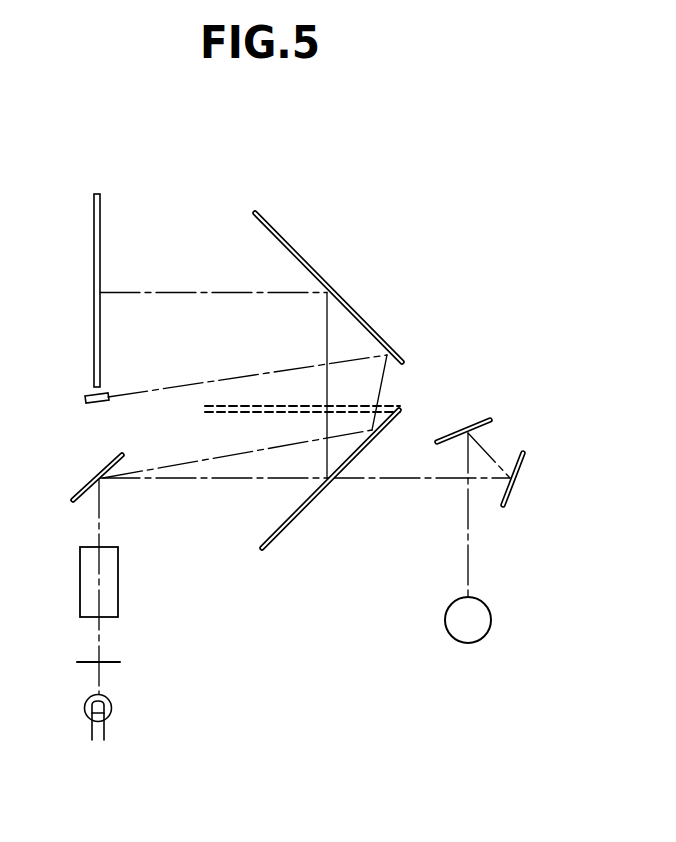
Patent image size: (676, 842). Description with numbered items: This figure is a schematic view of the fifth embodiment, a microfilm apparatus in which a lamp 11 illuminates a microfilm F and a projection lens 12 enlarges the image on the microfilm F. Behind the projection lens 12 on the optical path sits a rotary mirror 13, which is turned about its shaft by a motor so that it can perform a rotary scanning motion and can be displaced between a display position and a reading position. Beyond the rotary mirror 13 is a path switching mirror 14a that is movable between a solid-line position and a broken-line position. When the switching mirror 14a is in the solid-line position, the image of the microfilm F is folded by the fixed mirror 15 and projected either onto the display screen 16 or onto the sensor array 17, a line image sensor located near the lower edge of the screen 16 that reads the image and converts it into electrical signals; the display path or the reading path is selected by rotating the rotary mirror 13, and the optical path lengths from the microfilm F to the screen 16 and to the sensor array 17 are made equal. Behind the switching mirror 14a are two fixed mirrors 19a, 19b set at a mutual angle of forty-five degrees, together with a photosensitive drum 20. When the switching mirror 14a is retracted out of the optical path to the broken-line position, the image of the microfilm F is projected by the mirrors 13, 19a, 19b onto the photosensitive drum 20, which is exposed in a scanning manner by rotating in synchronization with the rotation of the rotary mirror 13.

The lamp 11 is at (112, 707).
The projection lens 12 is at (118, 569).
The microfilm F is at (112, 660).
The rotary mirror 13 is at (83, 480).
The path switching mirror 14a is at (300, 513).
The fixed mirror 15 is at (393, 338).
The display screen 16 is at (100, 194).
The sensor array 17 is at (85, 395).
The fixed mirror 19a is at (480, 420).
The fixed mirror 19b is at (513, 490).
The photosensitive drum 20 is at (487, 606).